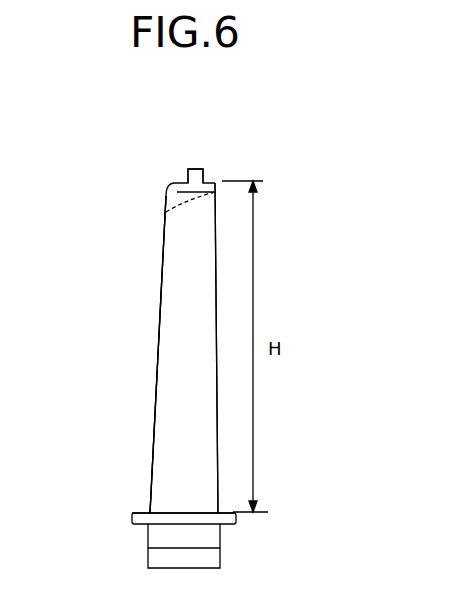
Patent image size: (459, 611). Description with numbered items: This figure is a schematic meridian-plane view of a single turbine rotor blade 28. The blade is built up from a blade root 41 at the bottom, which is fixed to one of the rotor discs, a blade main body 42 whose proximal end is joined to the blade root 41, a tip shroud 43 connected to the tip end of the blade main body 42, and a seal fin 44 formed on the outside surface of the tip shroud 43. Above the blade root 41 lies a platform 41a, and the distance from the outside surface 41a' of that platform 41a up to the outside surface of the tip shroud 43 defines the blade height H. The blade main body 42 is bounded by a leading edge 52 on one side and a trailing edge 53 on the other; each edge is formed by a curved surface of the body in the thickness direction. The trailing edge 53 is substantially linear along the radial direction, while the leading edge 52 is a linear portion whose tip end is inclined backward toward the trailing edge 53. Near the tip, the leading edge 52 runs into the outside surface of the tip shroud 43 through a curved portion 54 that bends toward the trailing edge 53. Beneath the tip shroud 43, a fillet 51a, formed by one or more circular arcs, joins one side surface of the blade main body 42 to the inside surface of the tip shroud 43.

The rotor blade 28 is at (281, 166).
The blade root 41 is at (213, 538).
The platform 41a is at (149, 535).
The outside surface of platform 41a' is at (164, 483).
The blade main body 42 is at (166, 410).
The tip shroud 43 is at (208, 180).
The seal fin 44 is at (190, 170).
The fillet 51a is at (166, 212).
The leading edge 52 is at (160, 307).
The trailing edge 53 is at (220, 417).
The curved portion 54 is at (175, 193).